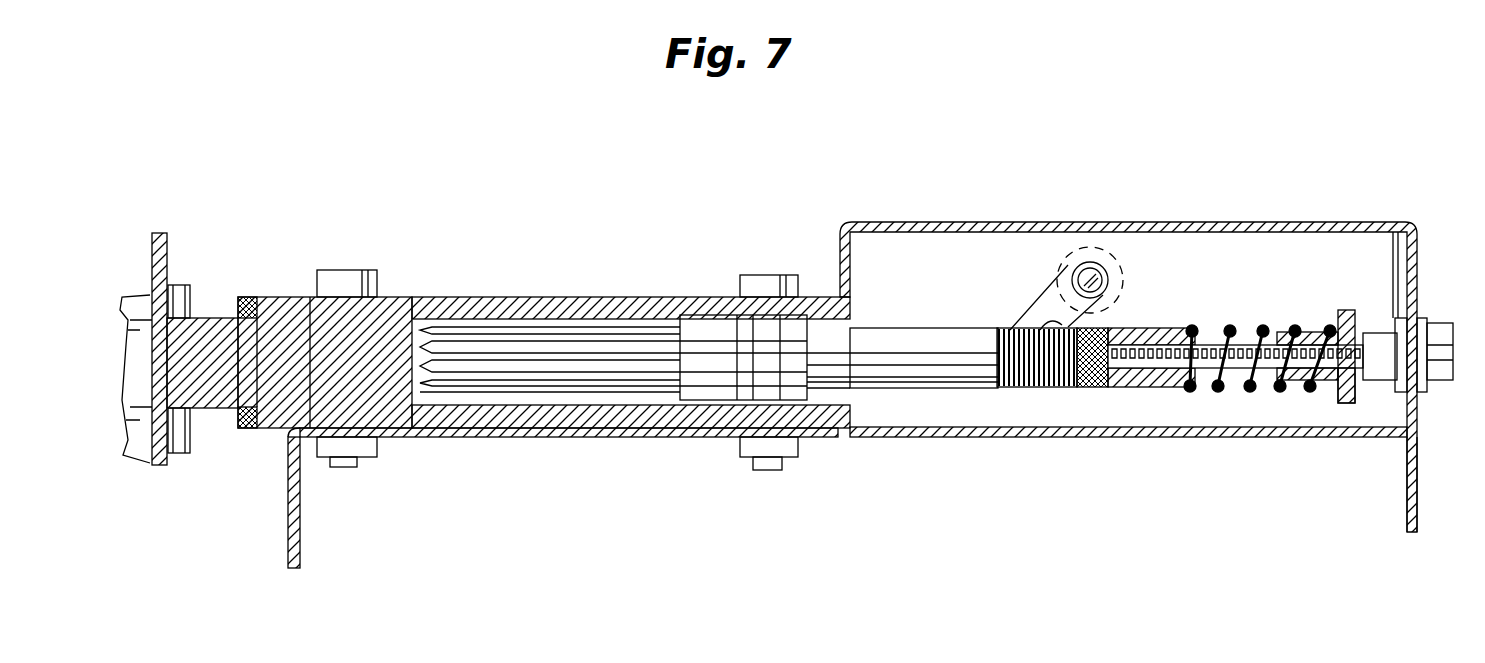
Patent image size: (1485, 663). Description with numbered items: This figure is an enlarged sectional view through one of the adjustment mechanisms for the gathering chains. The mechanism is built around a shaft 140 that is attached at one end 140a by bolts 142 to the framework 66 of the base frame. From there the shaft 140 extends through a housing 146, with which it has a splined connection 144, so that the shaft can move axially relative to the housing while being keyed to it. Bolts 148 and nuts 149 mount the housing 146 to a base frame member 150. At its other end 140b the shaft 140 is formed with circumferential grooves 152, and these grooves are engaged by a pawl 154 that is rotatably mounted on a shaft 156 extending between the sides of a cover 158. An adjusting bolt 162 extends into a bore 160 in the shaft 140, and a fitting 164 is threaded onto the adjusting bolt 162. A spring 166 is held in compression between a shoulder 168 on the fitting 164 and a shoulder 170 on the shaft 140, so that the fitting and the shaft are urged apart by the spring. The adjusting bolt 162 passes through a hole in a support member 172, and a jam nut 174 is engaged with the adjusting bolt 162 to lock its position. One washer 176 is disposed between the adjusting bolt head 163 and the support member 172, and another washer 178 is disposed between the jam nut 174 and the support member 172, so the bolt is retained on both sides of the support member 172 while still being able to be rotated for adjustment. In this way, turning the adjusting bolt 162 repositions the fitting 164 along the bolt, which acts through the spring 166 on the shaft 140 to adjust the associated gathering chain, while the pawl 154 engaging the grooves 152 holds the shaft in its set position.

The framework 66 is at (156, 233).
The shaft 140 is at (418, 297).
The one end of shaft 140a is at (221, 317).
The other end of shaft 140b is at (883, 337).
The bolts 142 is at (181, 285).
The splined connection 144 is at (492, 428).
The housing 146 is at (523, 297).
The bolts 148 is at (366, 270).
The nuts 149 is at (370, 457).
The base frame member 150 is at (288, 540).
The circumferential grooves 152 is at (1037, 388).
The pawl 154 is at (1040, 312).
The shaft 156 is at (1093, 262).
The cover 158 is at (878, 222).
The bore 160 is at (1162, 390).
The adjusting bolt 162 is at (1232, 392).
The adjusting bolt head 163 is at (1437, 380).
The fitting 164 is at (1340, 310).
The spring 166 is at (1260, 283).
The shoulder 168 is at (1337, 392).
The shoulder 170 is at (1190, 325).
The support member 172 is at (1407, 515).
The jam nut 174 is at (1378, 392).
The washer 176 is at (1425, 318).
The washer 178 is at (1395, 222).